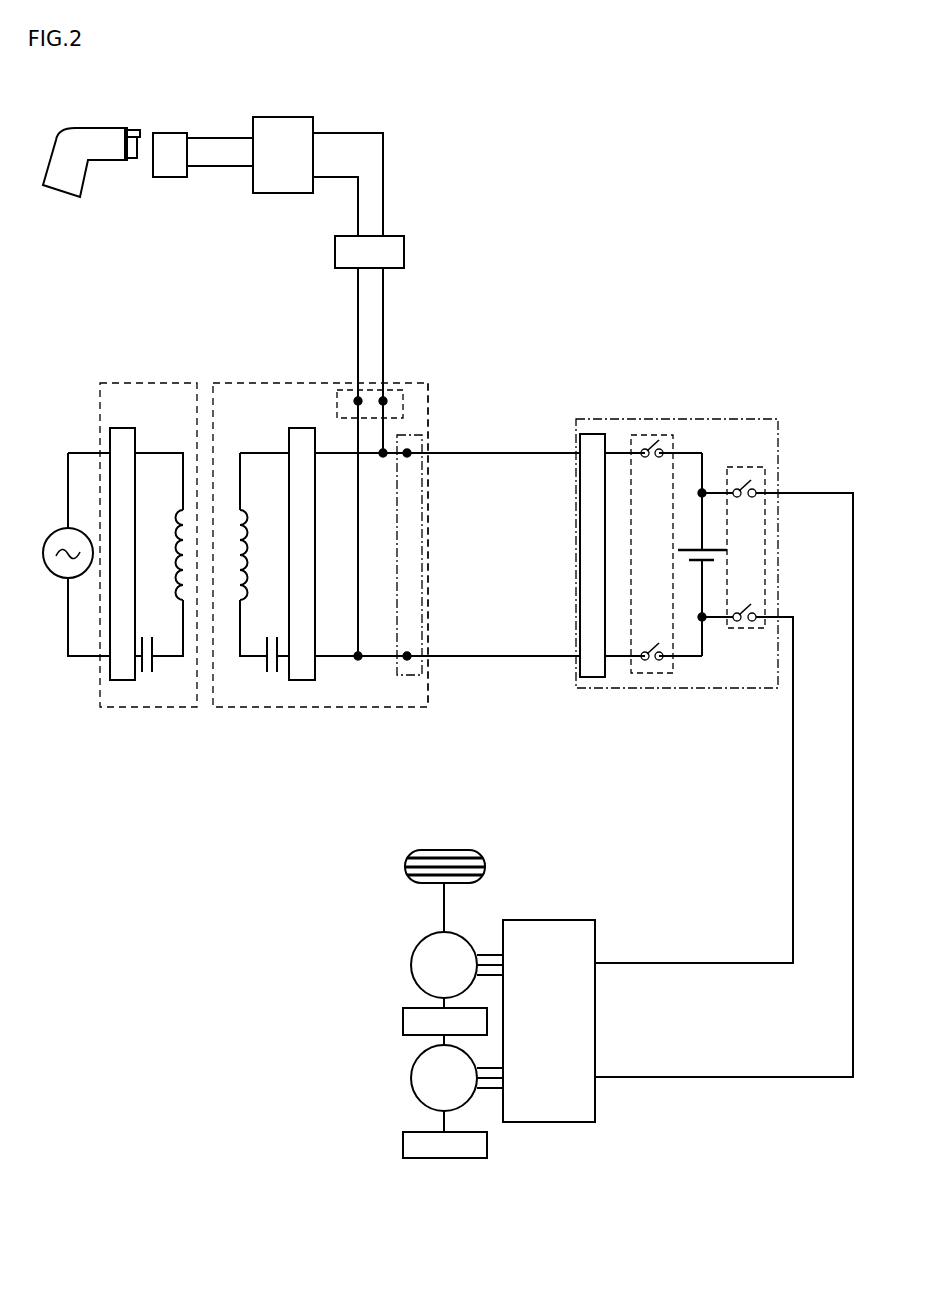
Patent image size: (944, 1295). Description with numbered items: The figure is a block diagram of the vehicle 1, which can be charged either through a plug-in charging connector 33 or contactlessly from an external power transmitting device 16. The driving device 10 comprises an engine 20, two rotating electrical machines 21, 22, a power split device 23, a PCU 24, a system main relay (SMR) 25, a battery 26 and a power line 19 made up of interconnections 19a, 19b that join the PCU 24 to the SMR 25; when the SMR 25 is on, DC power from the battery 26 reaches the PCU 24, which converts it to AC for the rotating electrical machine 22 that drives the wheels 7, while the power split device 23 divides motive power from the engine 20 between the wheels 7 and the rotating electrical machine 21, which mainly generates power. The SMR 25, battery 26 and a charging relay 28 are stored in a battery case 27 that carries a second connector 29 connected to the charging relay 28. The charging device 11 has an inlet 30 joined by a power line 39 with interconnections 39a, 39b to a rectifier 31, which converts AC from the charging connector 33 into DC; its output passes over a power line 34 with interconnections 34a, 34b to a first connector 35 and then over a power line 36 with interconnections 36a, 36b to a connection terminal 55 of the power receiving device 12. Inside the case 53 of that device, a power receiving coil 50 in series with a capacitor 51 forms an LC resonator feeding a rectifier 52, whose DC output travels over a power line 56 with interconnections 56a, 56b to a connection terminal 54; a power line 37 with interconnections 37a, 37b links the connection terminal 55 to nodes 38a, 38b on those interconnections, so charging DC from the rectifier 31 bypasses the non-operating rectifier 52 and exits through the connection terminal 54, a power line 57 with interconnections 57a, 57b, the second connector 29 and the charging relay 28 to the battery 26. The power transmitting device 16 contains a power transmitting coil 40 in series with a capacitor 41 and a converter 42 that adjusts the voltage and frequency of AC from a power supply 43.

The vehicle 1 is at (619, 107).
The wheels 7 is at (414, 865).
The driving device 10 is at (584, 891).
The charging device 11 is at (353, 92).
The power receiving device 12 is at (453, 555).
The power transmitting device 16 is at (120, 555).
The power line 19 is at (769, 864).
The interconnection 19a is at (755, 884).
The interconnection 19b is at (852, 842).
The engine 20 is at (403, 1141).
The rotating electrical machine 21 is at (411, 1078).
The rotating electrical machine 22 is at (411, 965).
The power split device 23 is at (403, 1022).
The PCU (power control unit) 24 is at (550, 1123).
The SMR (system main relay) 25 is at (714, 709).
The battery 26 is at (713, 550).
The battery case 27 is at (752, 467).
The charging relay 28 is at (648, 435).
The second connector 29 is at (593, 434).
The inlet 30 is at (170, 133).
The rectifier 31 is at (279, 135).
The charging connector 33 is at (93, 140).
The power line 34 is at (415, 184).
The interconnection 34a is at (359, 185).
The interconnection 34b is at (384, 221).
The first connector 35 is at (335, 255).
The power line 36 is at (438, 334).
The interconnection 36a is at (359, 289).
The interconnection 36b is at (384, 326).
The power line 37 is at (436, 520).
The interconnection 37a is at (359, 440).
The interconnection 37b is at (385, 428).
The node 38a is at (360, 654).
The node 38b is at (385, 455).
The power line 39 is at (225, 214).
The interconnection 39a is at (238, 166).
The interconnection 39b is at (208, 138).
The power transmitting coil 40 is at (178, 592).
The capacitor 41 is at (145, 673).
The converter 42 is at (122, 681).
The power supply 43 is at (72, 580).
The power receiving coil 50 is at (238, 592).
The capacitor 51 is at (262, 673).
The rectifier 52 is at (300, 681).
The case 53 is at (428, 712).
The connection terminal 54 is at (413, 676).
The connection terminal 55 is at (343, 390).
The power line 56 is at (361, 612).
The interconnection 56a is at (383, 658).
The interconnection 56b is at (333, 455).
The power line 57 is at (505, 612).
The interconnection 57a is at (480, 658).
The interconnection 57b is at (538, 455).